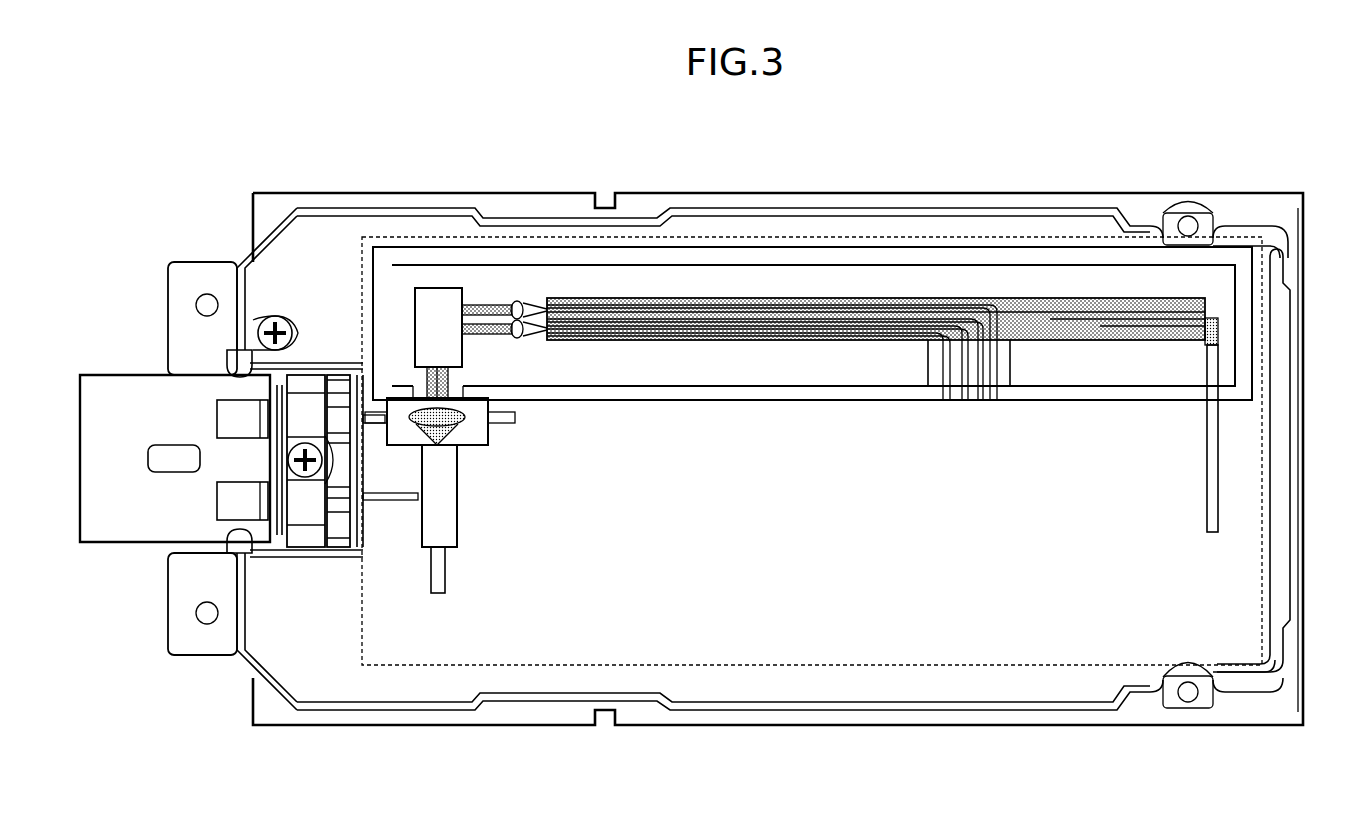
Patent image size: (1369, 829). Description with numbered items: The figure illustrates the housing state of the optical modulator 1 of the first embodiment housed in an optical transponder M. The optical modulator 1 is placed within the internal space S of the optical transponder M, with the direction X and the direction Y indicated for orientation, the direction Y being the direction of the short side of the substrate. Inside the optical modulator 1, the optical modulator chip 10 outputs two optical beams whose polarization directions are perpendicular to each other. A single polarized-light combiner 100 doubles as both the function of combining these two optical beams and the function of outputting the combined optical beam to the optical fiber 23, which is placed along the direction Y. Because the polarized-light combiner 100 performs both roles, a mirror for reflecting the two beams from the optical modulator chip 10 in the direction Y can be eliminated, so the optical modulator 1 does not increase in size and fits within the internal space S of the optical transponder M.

The optical modulator 1 is at (823, 416).
The optical modulator chip 10 is at (1087, 297).
The polarized-light combiner 100 is at (437, 288).
The optical fiber 23 is at (431, 570).
The internal space S is at (543, 237).
The optical transponder M is at (1303, 275).
The direction X is at (677, 282).
The direction Y is at (742, 347).